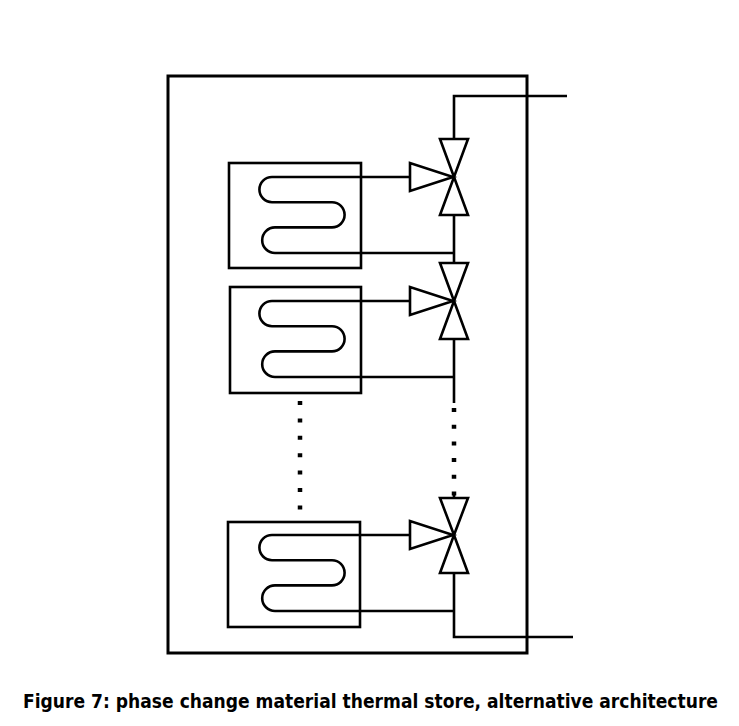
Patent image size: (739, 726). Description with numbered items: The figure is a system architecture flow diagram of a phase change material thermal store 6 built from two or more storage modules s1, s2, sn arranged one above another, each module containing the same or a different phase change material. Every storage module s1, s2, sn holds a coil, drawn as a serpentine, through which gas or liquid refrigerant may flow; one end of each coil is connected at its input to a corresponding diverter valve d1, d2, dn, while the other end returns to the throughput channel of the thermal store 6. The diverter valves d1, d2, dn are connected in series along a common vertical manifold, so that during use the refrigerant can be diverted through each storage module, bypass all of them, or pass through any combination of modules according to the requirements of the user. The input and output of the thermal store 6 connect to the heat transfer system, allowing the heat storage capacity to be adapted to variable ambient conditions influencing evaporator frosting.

The thermal store 6 is at (347, 337).
The storage module s1 is at (318, 215).
The storage module s2 is at (320, 340).
The storage module sn is at (318, 574).
The diverter valve d1 is at (465, 177).
The diverter valve d2 is at (464, 301).
The diverter valve dn is at (464, 535).